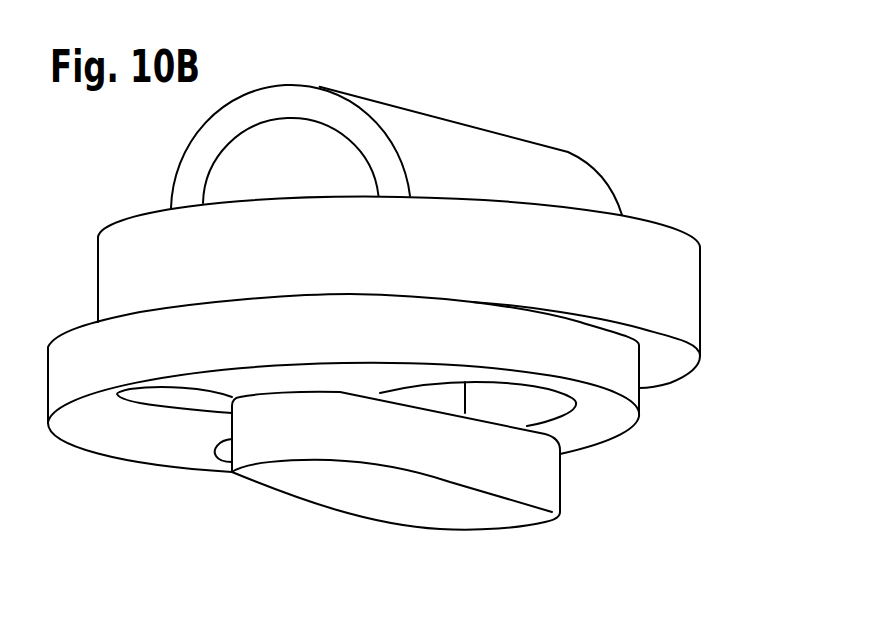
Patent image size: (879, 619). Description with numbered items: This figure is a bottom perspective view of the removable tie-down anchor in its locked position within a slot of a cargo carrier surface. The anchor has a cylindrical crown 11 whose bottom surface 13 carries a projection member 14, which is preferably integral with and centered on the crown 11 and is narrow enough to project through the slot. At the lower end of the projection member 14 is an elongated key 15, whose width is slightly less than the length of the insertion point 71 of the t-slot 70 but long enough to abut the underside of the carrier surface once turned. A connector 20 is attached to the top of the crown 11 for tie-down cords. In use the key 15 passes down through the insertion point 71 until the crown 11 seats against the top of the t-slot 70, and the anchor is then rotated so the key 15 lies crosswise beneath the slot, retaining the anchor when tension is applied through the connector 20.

The connector 20 is at (568, 152).
The crown 11 is at (702, 283).
The bottom surface 13 is at (669, 367).
The t-slot 70 is at (127, 462).
The insertion point 71 is at (617, 443).
The projection member 14 is at (466, 398).
The key 15 is at (537, 525).